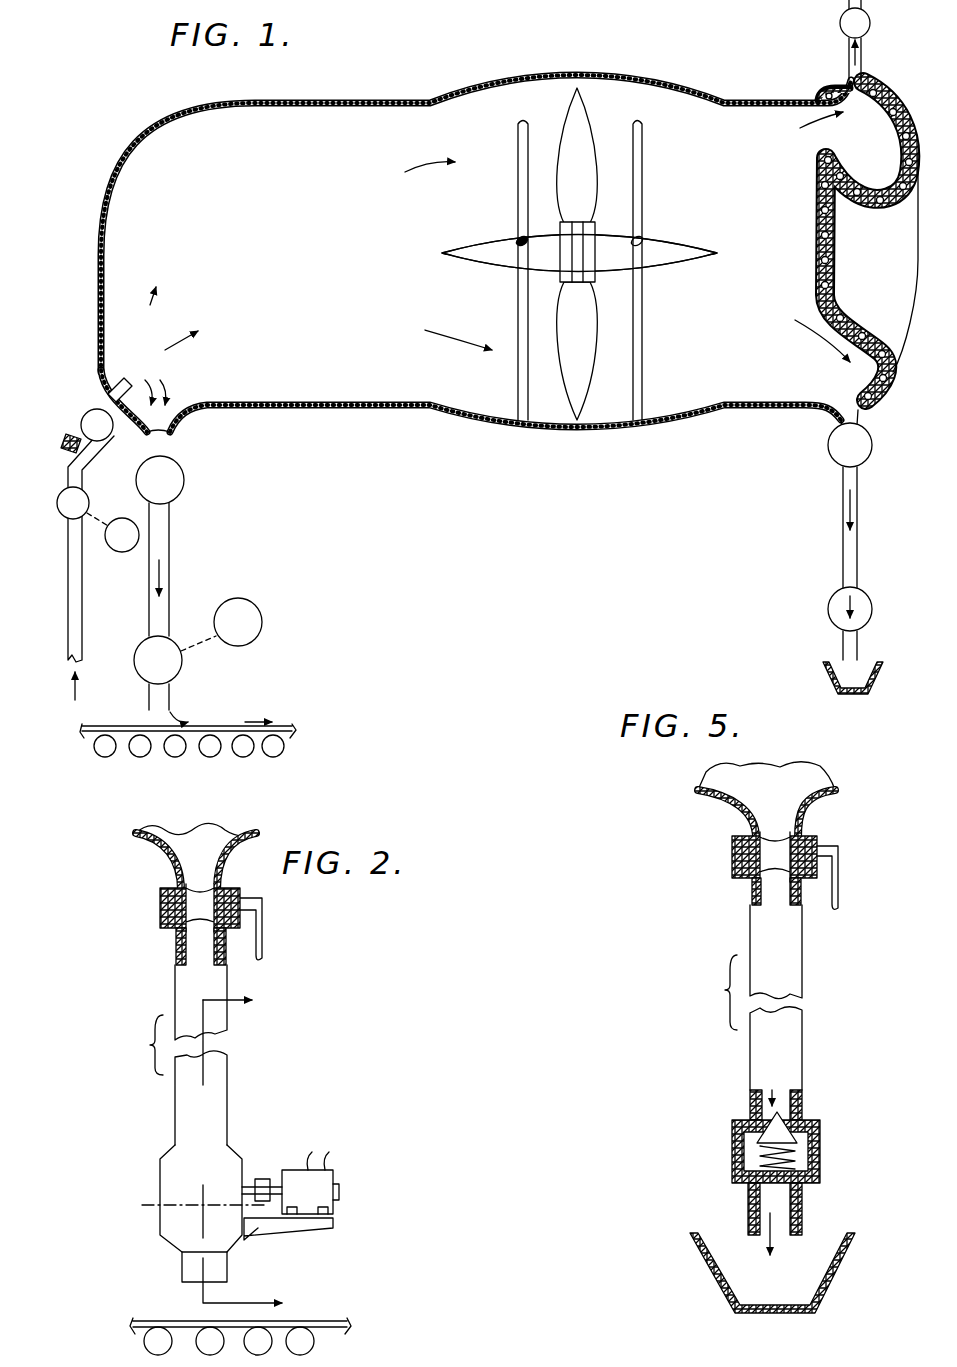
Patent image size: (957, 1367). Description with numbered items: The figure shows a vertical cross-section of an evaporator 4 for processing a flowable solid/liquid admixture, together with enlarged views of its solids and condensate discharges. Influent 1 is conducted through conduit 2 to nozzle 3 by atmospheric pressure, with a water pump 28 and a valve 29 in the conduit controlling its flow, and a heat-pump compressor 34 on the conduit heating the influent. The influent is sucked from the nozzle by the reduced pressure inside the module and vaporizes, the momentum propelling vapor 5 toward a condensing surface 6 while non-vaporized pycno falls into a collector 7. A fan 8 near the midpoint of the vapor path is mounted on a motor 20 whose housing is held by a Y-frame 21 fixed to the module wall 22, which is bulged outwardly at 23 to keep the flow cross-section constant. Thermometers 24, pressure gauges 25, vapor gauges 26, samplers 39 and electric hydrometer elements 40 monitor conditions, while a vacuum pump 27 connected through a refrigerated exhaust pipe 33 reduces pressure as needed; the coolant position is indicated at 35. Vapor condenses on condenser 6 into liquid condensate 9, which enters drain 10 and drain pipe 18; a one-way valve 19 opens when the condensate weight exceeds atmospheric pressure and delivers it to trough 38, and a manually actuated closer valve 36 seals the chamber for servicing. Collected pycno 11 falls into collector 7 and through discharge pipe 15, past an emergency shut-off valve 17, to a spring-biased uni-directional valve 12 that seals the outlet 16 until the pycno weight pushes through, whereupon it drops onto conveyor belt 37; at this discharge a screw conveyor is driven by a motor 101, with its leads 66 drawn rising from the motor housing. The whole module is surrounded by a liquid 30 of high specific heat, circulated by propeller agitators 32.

In FIG. 1, the influent 1 is at (67, 700).
In FIG. 1, the conduit 2 is at (66, 602).
In FIG. 1, the nozzle 3 is at (118, 374).
In FIG. 1, the evaporator 4 is at (380, 99).
In FIG. 2, the evaporator 4 is at (231, 1287).
In FIG. 1, the vapor 5 is at (190, 334).
In FIG. 1, the condensing surface 6 is at (815, 222).
In FIG. 1, the collector 7 is at (186, 412).
In FIG. 2, the collector 7 is at (175, 862).
In FIG. 1, the fan 8 is at (568, 346).
In FIG. 1, the liquid condensate 9 is at (855, 398).
In FIG. 1, the drain 10 is at (866, 410).
In FIG. 5, the drain 10 is at (766, 800).
In FIG. 1, the collected pycno 11 is at (183, 542).
In FIG. 1, the uni-directional valve 12 is at (182, 670).
In FIG. 2, the uni-directional valve 12 is at (160, 1205).
In FIG. 1, the discharge pipe 15 is at (170, 535).
In FIG. 2, the discharge pipe 15 is at (175, 983).
In FIG. 1, the outlet 16 is at (150, 712).
In FIG. 2, the outlet 16 is at (178, 1280).
In FIG. 1, the emergency shut-off valve 17 is at (184, 478).
In FIG. 2, the emergency shut-off valve 17 is at (160, 900).
In FIG. 1, the drain pipe 18 is at (861, 565).
In FIG. 5, the drain pipe 18 is at (798, 946).
In FIG. 1, the one-way valve 19 is at (830, 616).
In FIG. 5, the one-way valve 19 is at (803, 1120).
In FIG. 1, the motor 20 is at (668, 244).
In FIG. 1, the Y-frame 21 is at (642, 176).
In FIG. 1, the module wall 22 is at (142, 147).
In FIG. 1, the bulge 23 is at (577, 74).
In FIG. 1, the thermometer 24 is at (453, 254).
In FIG. 1, the pressure gauge 25 is at (444, 255).
In FIG. 1, the vapor gauge 26 is at (471, 254).
In FIG. 1, the vacuum pump 27 is at (871, 24).
In FIG. 1, the water pump 28 is at (83, 495).
In FIG. 1, the valve 29 is at (106, 434).
In FIG. 1, the liquid 30 is at (192, 257).
In FIG. 1, the propeller agitator 32 is at (409, 273).
In FIG. 1, the exhaust pipe 33 is at (866, 72).
In FIG. 1, the heat-pump compressor 34 is at (65, 438).
In FIG. 1, the coolant 35 is at (826, 88).
In FIG. 1, the closer valve 36 is at (872, 445).
In FIG. 5, the closer valve 36 is at (812, 850).
In FIG. 1, the conveyor belt 37 is at (292, 735).
In FIG. 2, the conveyor belt 37 is at (336, 1318).
In FIG. 1, the trough 38 is at (822, 666).
In FIG. 5, the trough 38 is at (706, 1268).
In FIG. 1, the sampler 39 is at (463, 254).
In FIG. 1, the electric hydrometer element 40 is at (492, 245).
In FIG. 2, the motor 66 is at (307, 1178).
In FIG. 2, the motor 101 is at (336, 1180).